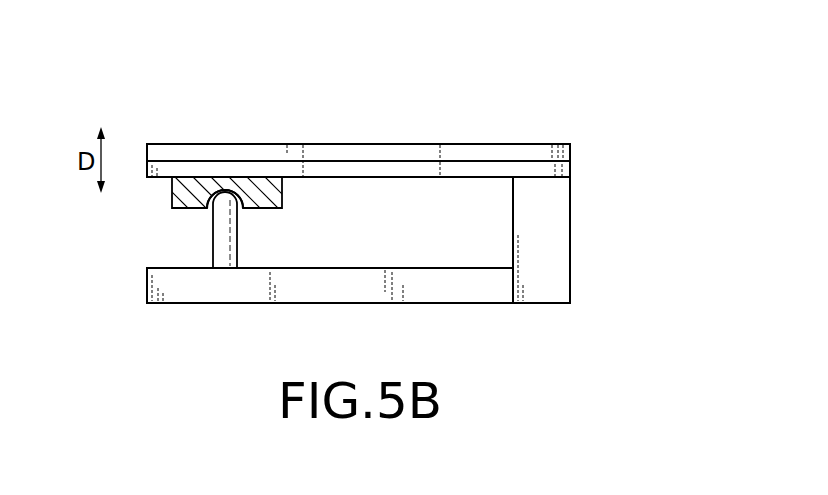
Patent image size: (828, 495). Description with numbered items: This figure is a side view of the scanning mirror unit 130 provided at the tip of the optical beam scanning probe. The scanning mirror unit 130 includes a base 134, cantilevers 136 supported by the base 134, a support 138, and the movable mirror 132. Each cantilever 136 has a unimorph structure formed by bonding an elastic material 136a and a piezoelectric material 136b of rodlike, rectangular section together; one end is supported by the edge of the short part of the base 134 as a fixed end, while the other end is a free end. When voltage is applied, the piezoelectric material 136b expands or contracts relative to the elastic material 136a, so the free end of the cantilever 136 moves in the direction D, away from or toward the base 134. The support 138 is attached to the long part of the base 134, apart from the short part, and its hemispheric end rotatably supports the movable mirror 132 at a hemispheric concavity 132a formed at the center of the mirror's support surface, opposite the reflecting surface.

The scanning mirror unit 130 is at (605, 217).
The movable mirror 132 is at (273, 195).
The hemispheric concavity 132a is at (212, 207).
The base 134 is at (450, 287).
The cantilever 136 is at (550, 94).
The elastic material 136a is at (430, 150).
The piezoelectric material 136b is at (502, 166).
The support 138 is at (232, 243).